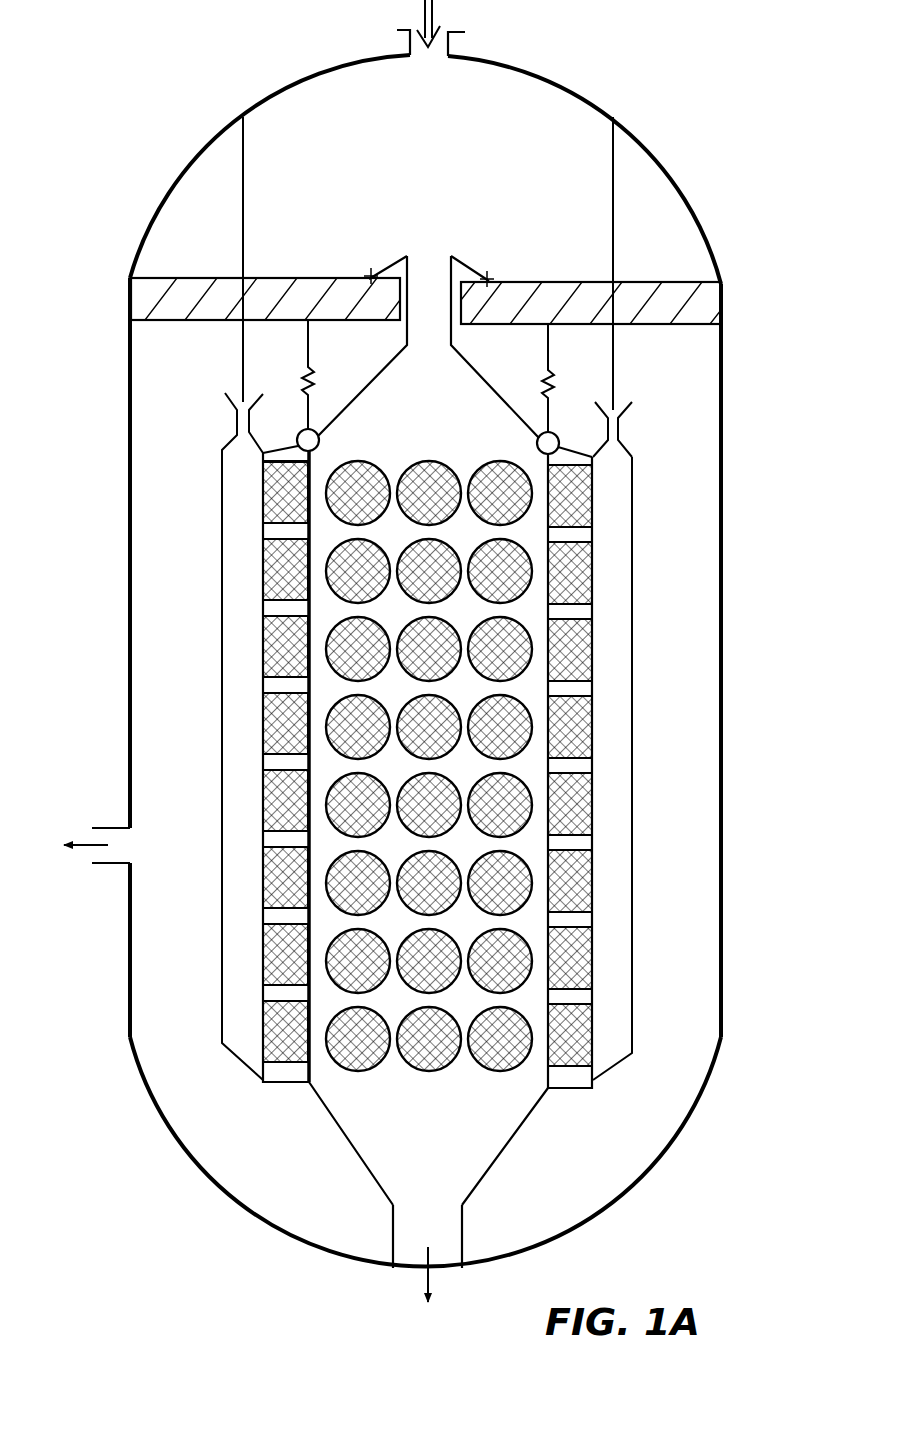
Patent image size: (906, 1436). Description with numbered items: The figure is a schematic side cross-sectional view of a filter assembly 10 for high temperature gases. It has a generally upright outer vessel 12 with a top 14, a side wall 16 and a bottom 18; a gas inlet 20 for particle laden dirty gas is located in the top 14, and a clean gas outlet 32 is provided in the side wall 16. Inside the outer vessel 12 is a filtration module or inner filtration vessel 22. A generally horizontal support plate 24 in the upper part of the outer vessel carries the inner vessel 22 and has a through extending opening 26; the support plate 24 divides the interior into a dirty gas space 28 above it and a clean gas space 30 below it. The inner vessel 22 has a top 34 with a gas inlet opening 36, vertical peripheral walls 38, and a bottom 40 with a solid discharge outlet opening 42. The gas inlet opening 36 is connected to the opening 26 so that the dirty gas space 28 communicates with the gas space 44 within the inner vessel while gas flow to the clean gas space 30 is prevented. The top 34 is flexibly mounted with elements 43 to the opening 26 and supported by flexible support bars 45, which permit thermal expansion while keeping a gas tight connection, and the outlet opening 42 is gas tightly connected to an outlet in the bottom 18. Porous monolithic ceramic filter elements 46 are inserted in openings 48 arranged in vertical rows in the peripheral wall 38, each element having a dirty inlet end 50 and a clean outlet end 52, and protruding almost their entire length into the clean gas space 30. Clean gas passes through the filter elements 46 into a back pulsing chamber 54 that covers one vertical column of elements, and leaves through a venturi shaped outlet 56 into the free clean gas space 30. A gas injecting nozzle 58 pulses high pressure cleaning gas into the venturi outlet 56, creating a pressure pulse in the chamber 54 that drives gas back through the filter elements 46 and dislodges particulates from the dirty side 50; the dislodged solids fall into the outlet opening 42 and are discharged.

The filter assembly 10 is at (459, 671).
The outer vessel 12 is at (459, 671).
The top 14 is at (575, 90).
The side wall 16 is at (722, 608).
The bottom 18 is at (295, 1245).
The gas inlet 20 is at (428, 58).
The inner filtration vessel 22 is at (165, 1000).
The support plate 24 is at (680, 292).
The opening 26 is at (430, 270).
The dirty gas space 28 is at (388, 166).
The clean gas space 30 is at (185, 532).
The clean gas outlet 32 is at (122, 836).
The top 34 is at (358, 392).
The gas inlet opening 36 is at (428, 350).
The peripheral walls 38 is at (305, 686).
The bottom 40 is at (357, 1155).
The solid discharge outlet opening 42 is at (445, 1222).
The flexible mounting elements 43 is at (393, 262).
The gas space 44 is at (501, 740).
The flexible support bars 45 is at (308, 342).
The porous monolithic ceramic filter elements 46 is at (500, 965).
The openings 48 is at (531, 1071).
The inlet end 50 is at (316, 1060).
The outlet end 52 is at (256, 1038).
The back pulsing chamber 54 is at (615, 524).
The venturi shaped outlet 56 is at (622, 425).
The gas injecting nozzle 58 is at (615, 367).